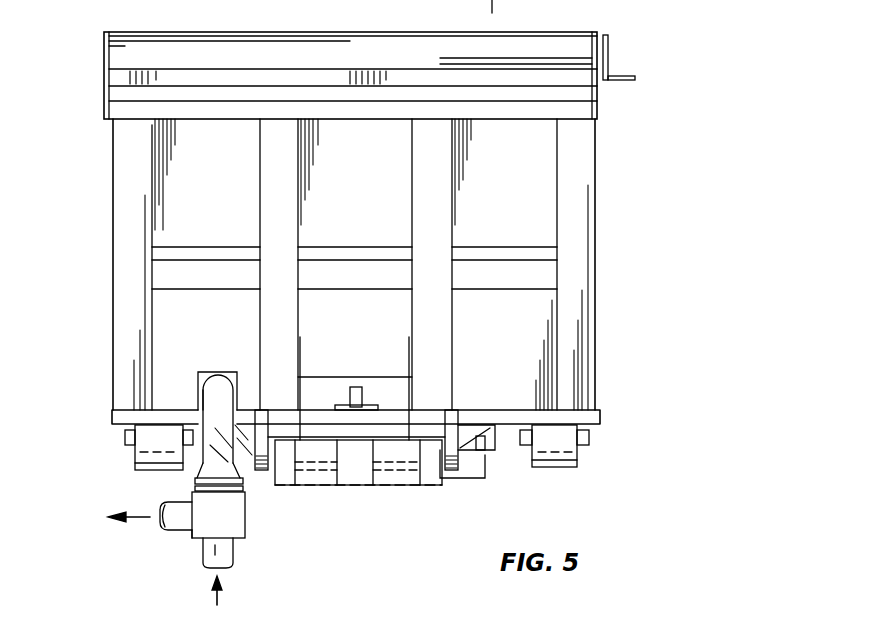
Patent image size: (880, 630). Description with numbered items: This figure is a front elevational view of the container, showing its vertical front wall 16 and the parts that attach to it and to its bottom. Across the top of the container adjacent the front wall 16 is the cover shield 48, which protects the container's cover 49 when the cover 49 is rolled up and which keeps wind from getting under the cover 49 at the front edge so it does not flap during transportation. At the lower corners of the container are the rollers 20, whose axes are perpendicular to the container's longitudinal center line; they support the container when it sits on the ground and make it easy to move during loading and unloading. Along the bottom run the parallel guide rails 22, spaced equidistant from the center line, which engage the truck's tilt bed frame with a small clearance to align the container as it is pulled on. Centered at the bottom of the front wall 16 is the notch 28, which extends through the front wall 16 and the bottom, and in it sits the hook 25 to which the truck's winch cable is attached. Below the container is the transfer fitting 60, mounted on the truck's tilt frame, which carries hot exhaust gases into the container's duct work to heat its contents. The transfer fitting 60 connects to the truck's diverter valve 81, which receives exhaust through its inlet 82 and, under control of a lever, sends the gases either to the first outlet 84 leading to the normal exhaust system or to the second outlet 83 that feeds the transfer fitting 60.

The front wall 16 is at (150, 163).
The rollers 20 is at (137, 455).
The guide rails 22 is at (450, 418).
The hook 25 is at (375, 360).
The notch 28 is at (362, 327).
The cover shield 48 is at (600, 33).
The cover 49 is at (612, 41).
The transfer fitting 60 is at (215, 380).
The diverter valve 81 is at (192, 533).
The inlet 82 is at (218, 556).
The second outlet 83 is at (218, 515).
The first outlet 84 is at (168, 507).